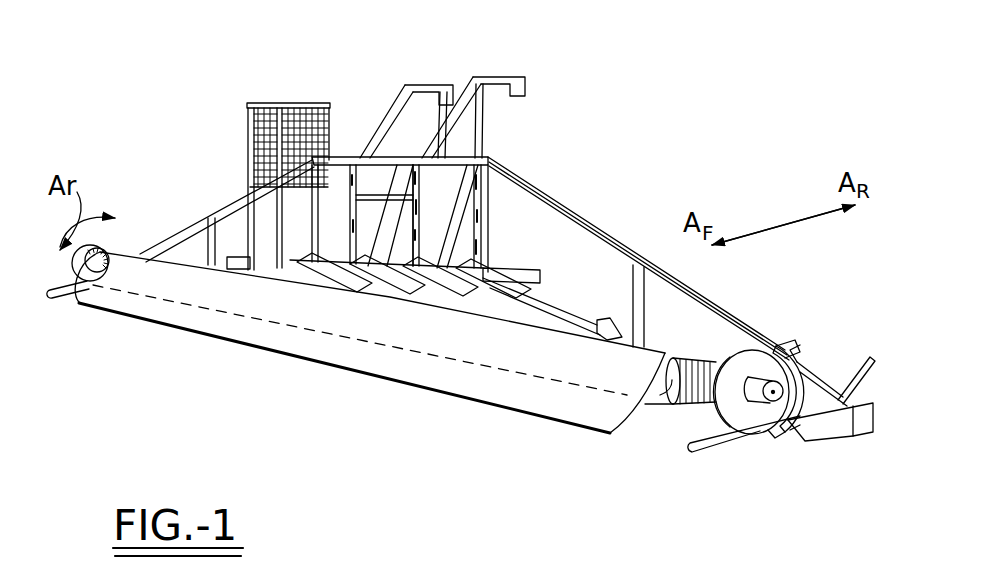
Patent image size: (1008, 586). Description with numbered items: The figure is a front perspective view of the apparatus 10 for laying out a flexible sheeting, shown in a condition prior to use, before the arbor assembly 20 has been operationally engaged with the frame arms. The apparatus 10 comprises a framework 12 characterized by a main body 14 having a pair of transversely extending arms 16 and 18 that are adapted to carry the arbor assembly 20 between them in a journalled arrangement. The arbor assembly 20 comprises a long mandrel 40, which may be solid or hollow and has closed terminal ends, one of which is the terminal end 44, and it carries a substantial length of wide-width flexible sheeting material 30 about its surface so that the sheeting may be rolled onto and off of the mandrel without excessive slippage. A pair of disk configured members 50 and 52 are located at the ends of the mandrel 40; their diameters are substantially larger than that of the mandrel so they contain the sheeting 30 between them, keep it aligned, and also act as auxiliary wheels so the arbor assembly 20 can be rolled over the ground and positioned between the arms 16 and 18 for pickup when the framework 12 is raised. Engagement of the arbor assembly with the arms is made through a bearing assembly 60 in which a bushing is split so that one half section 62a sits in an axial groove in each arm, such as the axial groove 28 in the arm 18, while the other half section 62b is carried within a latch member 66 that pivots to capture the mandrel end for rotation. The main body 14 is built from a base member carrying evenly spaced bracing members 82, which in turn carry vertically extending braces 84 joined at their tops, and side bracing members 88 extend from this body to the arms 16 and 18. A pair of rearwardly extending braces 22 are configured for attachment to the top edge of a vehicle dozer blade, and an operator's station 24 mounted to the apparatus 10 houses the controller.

The apparatus 10 is at (208, 110).
The framework 12 is at (502, 156).
The main body 14 is at (500, 215).
The arm 16 is at (72, 304).
The arm 18 is at (702, 449).
The arbor assembly 20 is at (690, 416).
The rearwardly extending braces 22 is at (493, 79).
The operator's station 24 is at (278, 104).
The axial groove 28 is at (770, 402).
The flexible sheeting material 30 is at (350, 368).
The mandrel 40 is at (676, 406).
The terminal end 44 is at (801, 425).
The disk configured member 50 is at (98, 247).
The disk configured member 52 is at (747, 414).
The bearing assembly 60 is at (813, 355).
The one-half section of bushing 62a is at (782, 430).
The other half section of bushing 62b is at (783, 360).
The latch member 66 is at (802, 370).
The bracing members 82 is at (400, 300).
The vertically extending braces 84 is at (430, 241).
The side bracing members 88 is at (530, 186).